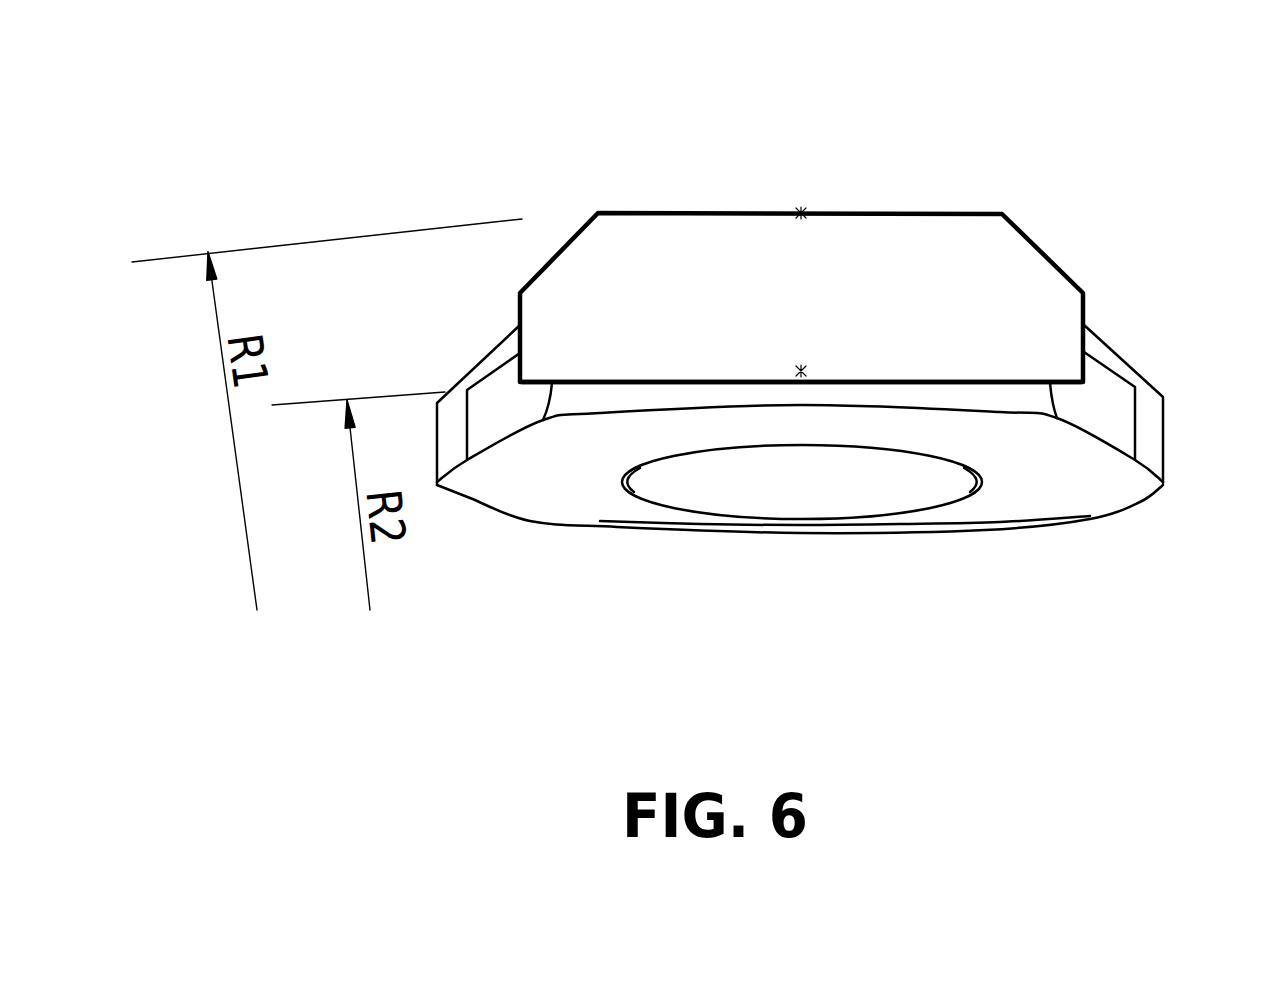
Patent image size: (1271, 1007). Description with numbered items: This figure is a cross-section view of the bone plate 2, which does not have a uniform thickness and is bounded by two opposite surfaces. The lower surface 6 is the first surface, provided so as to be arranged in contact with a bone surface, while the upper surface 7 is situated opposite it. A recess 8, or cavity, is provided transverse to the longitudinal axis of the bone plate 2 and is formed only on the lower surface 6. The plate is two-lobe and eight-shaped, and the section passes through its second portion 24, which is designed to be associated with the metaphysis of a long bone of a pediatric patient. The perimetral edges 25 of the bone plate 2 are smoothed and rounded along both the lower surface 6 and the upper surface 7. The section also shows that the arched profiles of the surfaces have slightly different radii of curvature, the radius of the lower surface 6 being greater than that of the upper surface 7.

The bone plate 2 is at (604, 146).
The upper surface 7 is at (801, 212).
The lower surface 6 is at (957, 380).
The recess 8 is at (653, 390).
The second portion 24 is at (556, 487).
The perimetral edges 25 is at (1115, 345).